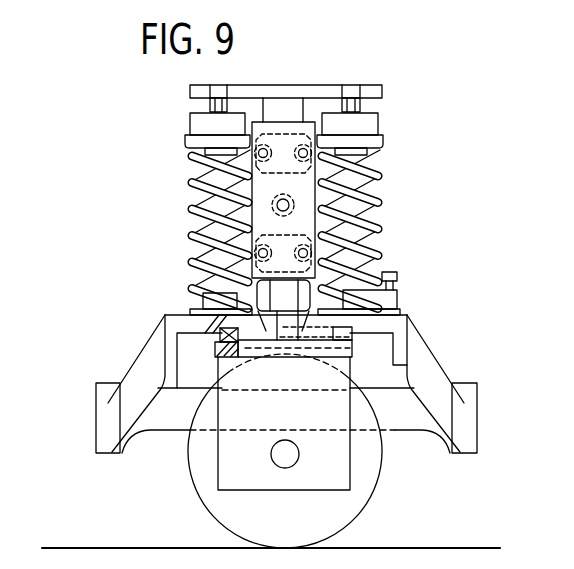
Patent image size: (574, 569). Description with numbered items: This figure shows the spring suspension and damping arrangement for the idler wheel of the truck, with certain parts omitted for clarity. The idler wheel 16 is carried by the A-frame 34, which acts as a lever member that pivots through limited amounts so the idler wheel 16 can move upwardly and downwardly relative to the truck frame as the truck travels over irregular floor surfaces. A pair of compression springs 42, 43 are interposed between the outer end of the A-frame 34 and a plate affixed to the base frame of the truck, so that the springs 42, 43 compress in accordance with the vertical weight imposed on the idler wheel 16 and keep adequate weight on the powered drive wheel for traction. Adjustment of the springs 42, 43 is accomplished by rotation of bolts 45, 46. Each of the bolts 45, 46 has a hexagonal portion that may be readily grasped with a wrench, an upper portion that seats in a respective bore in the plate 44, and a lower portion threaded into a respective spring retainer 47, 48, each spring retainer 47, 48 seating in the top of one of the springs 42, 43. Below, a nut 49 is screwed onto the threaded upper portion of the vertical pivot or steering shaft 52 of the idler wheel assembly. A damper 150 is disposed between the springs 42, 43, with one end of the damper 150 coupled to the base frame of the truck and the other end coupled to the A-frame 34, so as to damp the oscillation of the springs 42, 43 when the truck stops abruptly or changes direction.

The idler wheel 16 is at (192, 480).
The A-frame 34 is at (95, 407).
The compression spring 42 is at (382, 230).
The compression spring 43 is at (187, 183).
The plate 44 is at (283, 85).
The bolt 45 is at (362, 100).
The bolt 46 is at (210, 105).
The spring retainer 47 is at (380, 127).
The spring retainer 48 is at (192, 122).
The nut 49 is at (380, 258).
The steering shaft 52 is at (200, 262).
The damper 150 is at (312, 108).